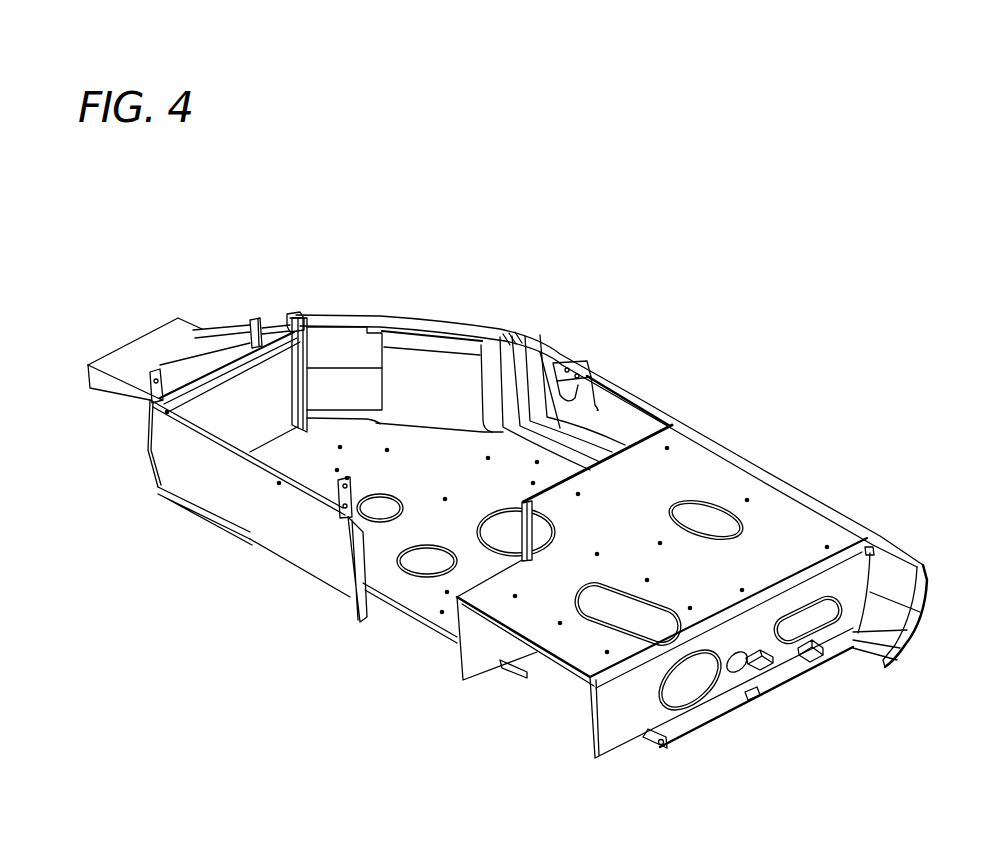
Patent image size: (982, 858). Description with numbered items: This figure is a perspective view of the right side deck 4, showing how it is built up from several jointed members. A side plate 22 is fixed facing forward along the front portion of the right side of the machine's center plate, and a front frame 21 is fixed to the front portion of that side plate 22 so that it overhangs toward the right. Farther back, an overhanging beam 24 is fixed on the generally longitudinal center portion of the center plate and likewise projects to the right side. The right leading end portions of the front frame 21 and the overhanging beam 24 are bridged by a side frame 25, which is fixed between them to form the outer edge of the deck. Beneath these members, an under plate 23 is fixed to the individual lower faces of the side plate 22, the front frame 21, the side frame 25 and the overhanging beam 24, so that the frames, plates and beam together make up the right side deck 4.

The right side deck 4 is at (375, 299).
The front frame 21 is at (283, 311).
The side plate 22 is at (258, 542).
The under plate 23 is at (410, 615).
The overhanging beam 24 is at (557, 663).
The side frame 25 is at (620, 377).